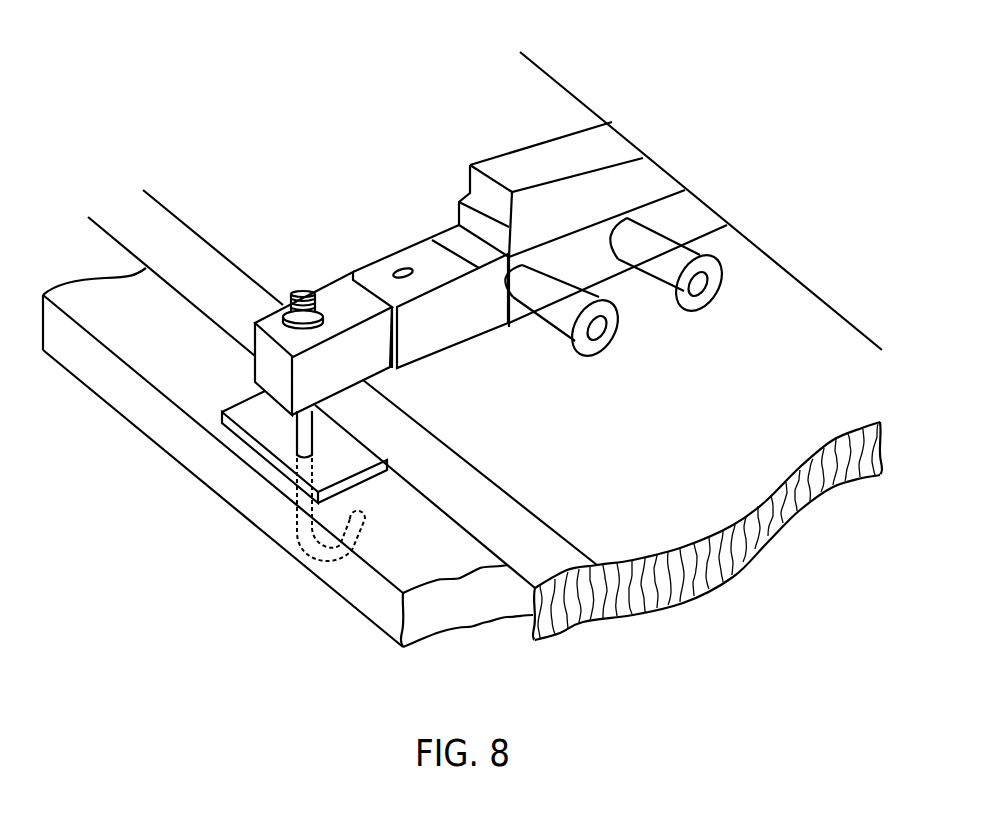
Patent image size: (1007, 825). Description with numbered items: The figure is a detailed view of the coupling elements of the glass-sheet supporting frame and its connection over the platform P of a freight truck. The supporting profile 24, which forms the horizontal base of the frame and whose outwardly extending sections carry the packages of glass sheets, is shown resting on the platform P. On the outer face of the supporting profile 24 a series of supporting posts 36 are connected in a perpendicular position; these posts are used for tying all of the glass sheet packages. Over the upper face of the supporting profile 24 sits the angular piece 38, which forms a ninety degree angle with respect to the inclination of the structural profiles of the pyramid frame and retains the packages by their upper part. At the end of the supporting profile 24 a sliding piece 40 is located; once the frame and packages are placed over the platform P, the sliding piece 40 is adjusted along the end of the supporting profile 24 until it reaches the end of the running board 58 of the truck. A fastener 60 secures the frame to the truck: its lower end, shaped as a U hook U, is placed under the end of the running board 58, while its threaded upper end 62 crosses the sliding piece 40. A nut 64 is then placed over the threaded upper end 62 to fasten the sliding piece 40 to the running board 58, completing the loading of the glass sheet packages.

The supporting profile 24 is at (450, 323).
The supporting posts 36 is at (566, 302).
The angular piece 38 is at (590, 200).
The sliding piece 40 is at (330, 373).
The running board 58 is at (378, 592).
The fastener 60 is at (293, 490).
The threaded upper end 62 is at (283, 305).
The nut 64 is at (295, 332).
The U hook U is at (337, 552).
The platform P is at (677, 427).